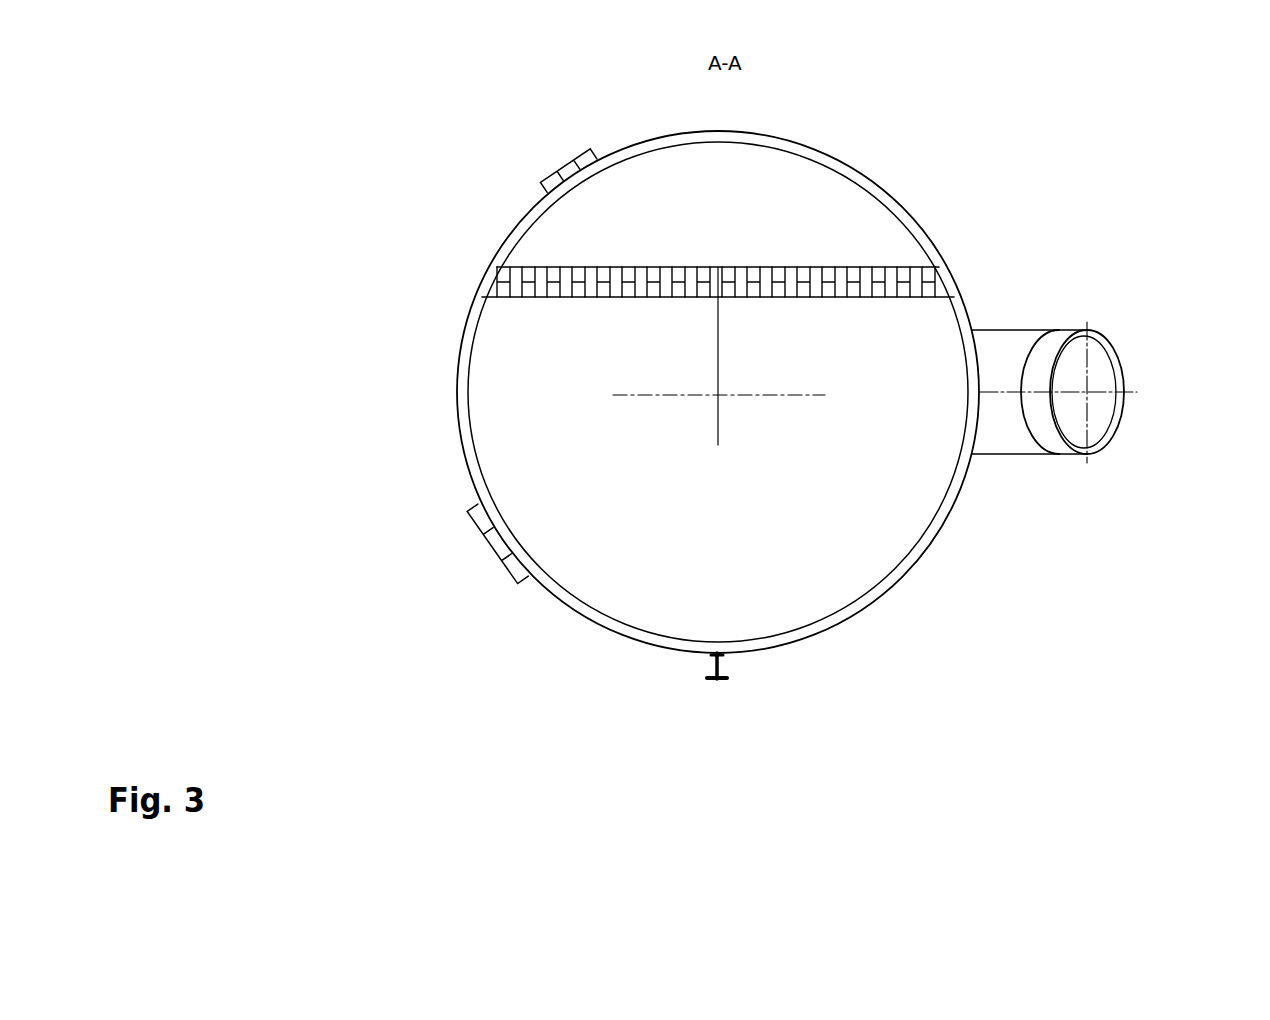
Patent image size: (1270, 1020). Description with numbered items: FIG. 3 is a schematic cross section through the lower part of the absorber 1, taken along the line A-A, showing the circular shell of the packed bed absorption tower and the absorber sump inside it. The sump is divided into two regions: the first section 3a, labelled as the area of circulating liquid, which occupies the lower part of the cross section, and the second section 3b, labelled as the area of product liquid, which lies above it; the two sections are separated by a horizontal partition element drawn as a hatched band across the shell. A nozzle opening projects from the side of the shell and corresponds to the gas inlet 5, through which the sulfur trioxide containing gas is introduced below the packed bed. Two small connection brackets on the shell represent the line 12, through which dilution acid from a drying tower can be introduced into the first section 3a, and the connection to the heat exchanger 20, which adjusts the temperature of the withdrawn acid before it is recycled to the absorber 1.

The absorber 1 is at (447, 392).
The first section 3a is at (870, 550).
The second section 3b is at (876, 240).
The gas inlet 5 is at (1102, 425).
The line 12 is at (470, 570).
The heat exchanger (cooler) 20 is at (565, 152).